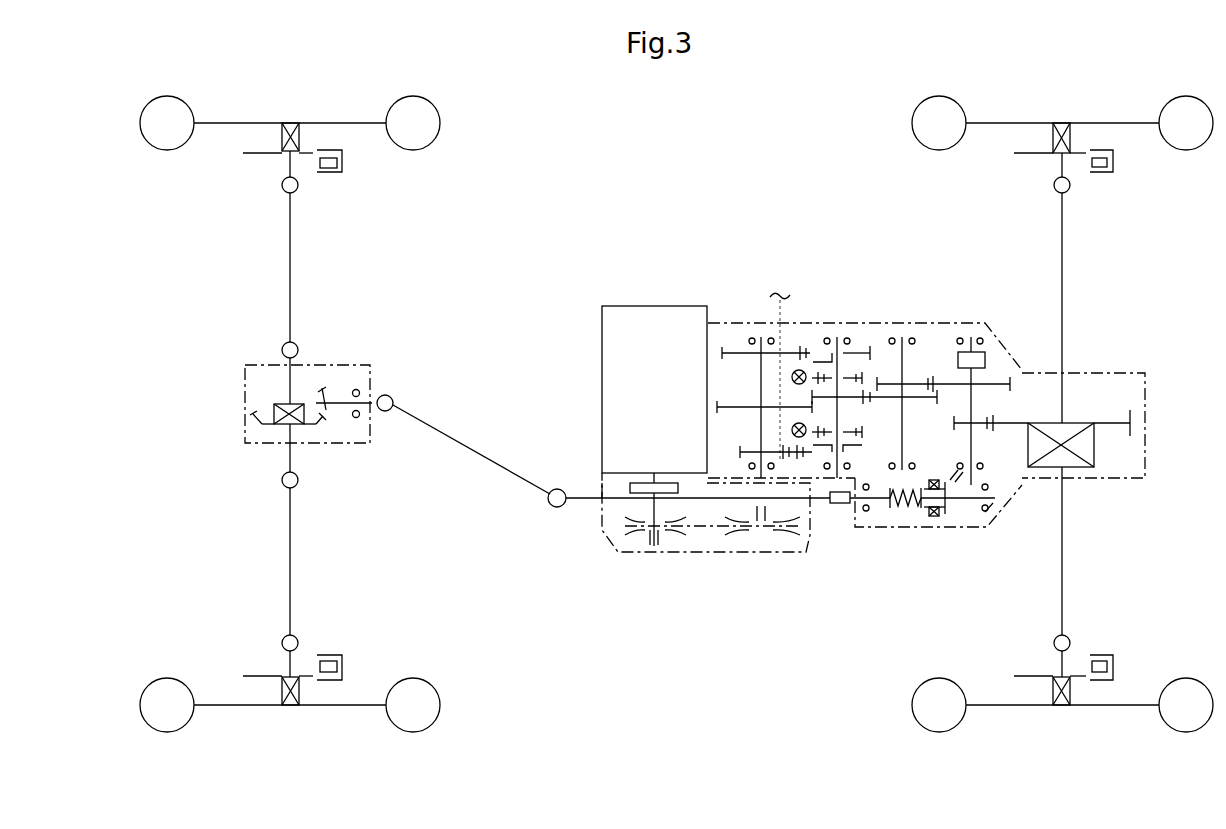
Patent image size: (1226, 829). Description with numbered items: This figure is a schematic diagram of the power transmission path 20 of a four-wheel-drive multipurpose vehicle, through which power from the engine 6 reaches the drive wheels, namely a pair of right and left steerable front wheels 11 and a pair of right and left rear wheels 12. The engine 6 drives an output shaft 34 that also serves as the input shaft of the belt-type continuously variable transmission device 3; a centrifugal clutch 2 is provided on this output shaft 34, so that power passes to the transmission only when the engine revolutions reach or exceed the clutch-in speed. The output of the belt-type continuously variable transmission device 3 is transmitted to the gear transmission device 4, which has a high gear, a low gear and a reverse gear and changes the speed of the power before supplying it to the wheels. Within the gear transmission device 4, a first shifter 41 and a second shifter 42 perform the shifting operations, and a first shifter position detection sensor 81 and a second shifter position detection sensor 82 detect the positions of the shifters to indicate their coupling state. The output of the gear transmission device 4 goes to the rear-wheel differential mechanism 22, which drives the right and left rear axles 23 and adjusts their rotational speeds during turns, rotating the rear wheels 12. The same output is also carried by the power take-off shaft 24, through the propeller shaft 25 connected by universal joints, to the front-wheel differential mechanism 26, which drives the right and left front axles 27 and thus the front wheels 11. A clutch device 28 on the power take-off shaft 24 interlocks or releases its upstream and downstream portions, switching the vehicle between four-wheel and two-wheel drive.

The centrifugal clutch 2 is at (606, 482).
The belt-type continuously variable transmission device 3 is at (716, 553).
The gear transmission device 4 is at (934, 322).
The engine 6 is at (645, 300).
The front wheels 11 is at (170, 98).
The rear wheels 12 is at (913, 130).
The power transmission path 20 is at (628, 507).
The rear-wheel differential mechanism 22 is at (1094, 446).
The rear axles 23 is at (1062, 265).
The power take-off shaft 24 is at (585, 505).
The propeller shaft 25 is at (478, 458).
The front-wheel differential mechanism 26 is at (328, 445).
The front axles 27 is at (290, 265).
The clutch device 28 is at (926, 512).
The output shaft 34 is at (650, 483).
The first shifter 41 is at (806, 350).
The second shifter 42 is at (822, 505).
The first shifter position detection sensor 81 is at (797, 370).
The second shifter position detection sensor 82 is at (792, 432).